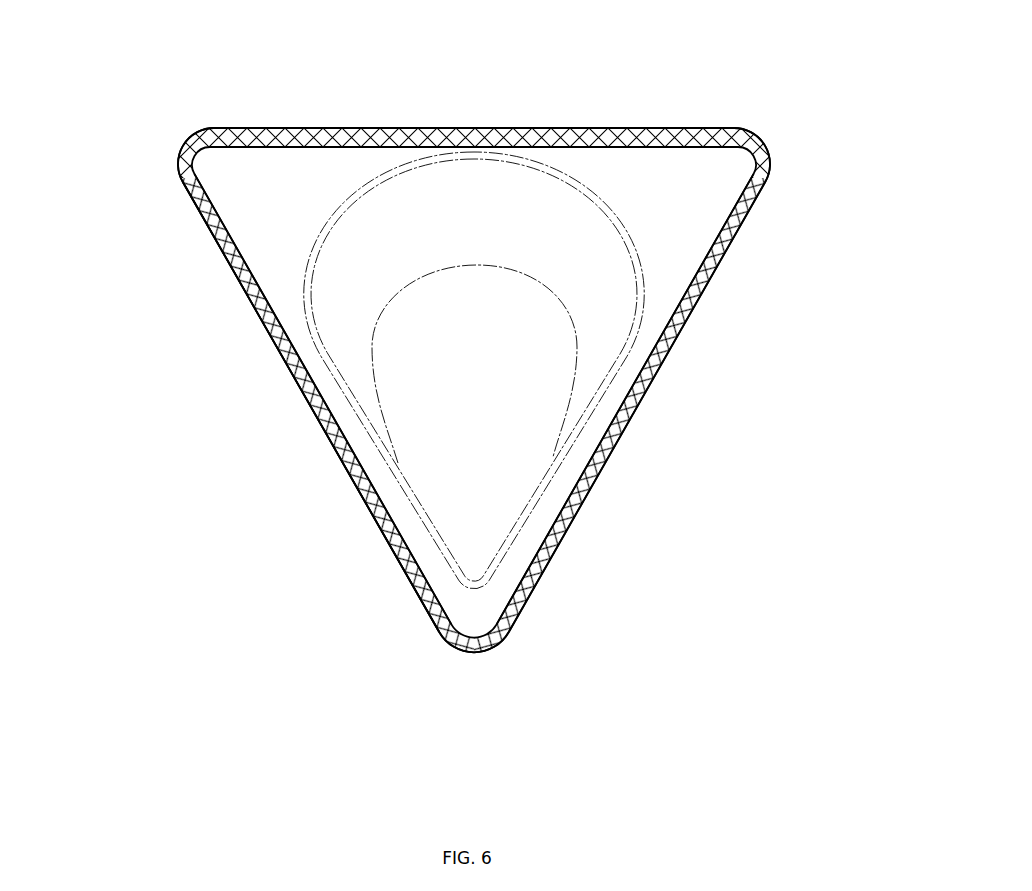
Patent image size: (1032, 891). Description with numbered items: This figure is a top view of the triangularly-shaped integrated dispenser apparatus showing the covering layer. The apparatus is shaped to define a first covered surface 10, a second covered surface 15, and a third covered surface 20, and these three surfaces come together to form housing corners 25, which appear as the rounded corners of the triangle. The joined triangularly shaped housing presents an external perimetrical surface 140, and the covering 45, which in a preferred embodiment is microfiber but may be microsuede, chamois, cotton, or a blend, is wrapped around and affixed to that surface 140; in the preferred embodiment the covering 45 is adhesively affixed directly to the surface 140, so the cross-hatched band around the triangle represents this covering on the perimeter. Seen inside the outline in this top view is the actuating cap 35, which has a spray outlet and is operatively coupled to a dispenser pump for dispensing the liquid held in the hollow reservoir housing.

The first covered surface 10 is at (623, 128).
The second covered surface 15 is at (353, 480).
The third covered surface 20 is at (622, 438).
The housing corners 25 is at (186, 150).
The actuating cap 35 is at (470, 410).
The covering 45 is at (388, 128).
The external perimetrical surface 140 is at (288, 128).